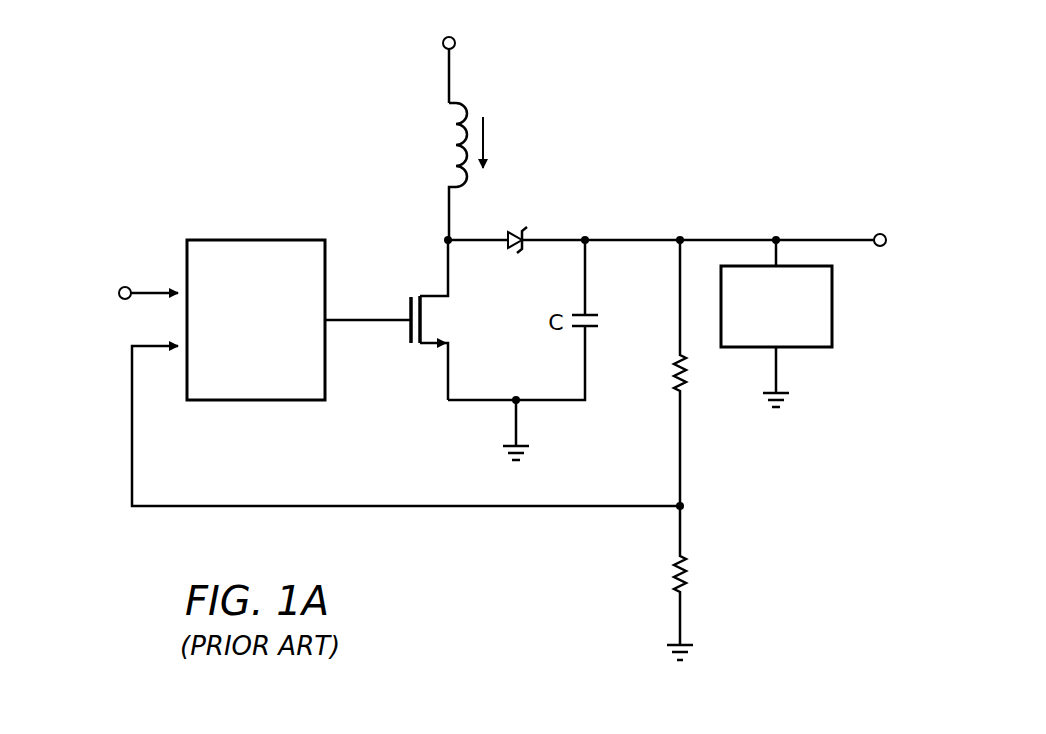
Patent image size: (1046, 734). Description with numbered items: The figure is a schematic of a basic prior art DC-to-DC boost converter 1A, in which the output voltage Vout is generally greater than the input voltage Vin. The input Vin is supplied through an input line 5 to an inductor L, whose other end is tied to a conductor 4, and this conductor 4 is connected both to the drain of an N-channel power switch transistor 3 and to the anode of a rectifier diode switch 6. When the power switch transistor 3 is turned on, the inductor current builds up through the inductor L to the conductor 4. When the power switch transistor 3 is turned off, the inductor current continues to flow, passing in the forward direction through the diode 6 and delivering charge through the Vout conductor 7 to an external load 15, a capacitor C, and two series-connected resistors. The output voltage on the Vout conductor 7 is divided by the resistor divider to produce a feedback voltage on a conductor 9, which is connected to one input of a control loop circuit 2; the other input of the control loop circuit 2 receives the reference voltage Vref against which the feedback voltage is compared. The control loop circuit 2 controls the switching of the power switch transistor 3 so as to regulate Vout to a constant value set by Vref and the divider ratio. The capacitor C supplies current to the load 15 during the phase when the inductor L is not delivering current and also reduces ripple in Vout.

The DC-to-DC boost converter 1A is at (864, 128).
The control loop circuit 2 is at (254, 238).
The N-channel power switch transistor 3 is at (408, 305).
The conductor 4 is at (447, 267).
The input node / inductor line 5 is at (447, 78).
The rectifier diode switch 6 is at (521, 247).
The Vout conductor 7 is at (634, 238).
The conductor 9 is at (130, 428).
The external load 15 is at (834, 306).